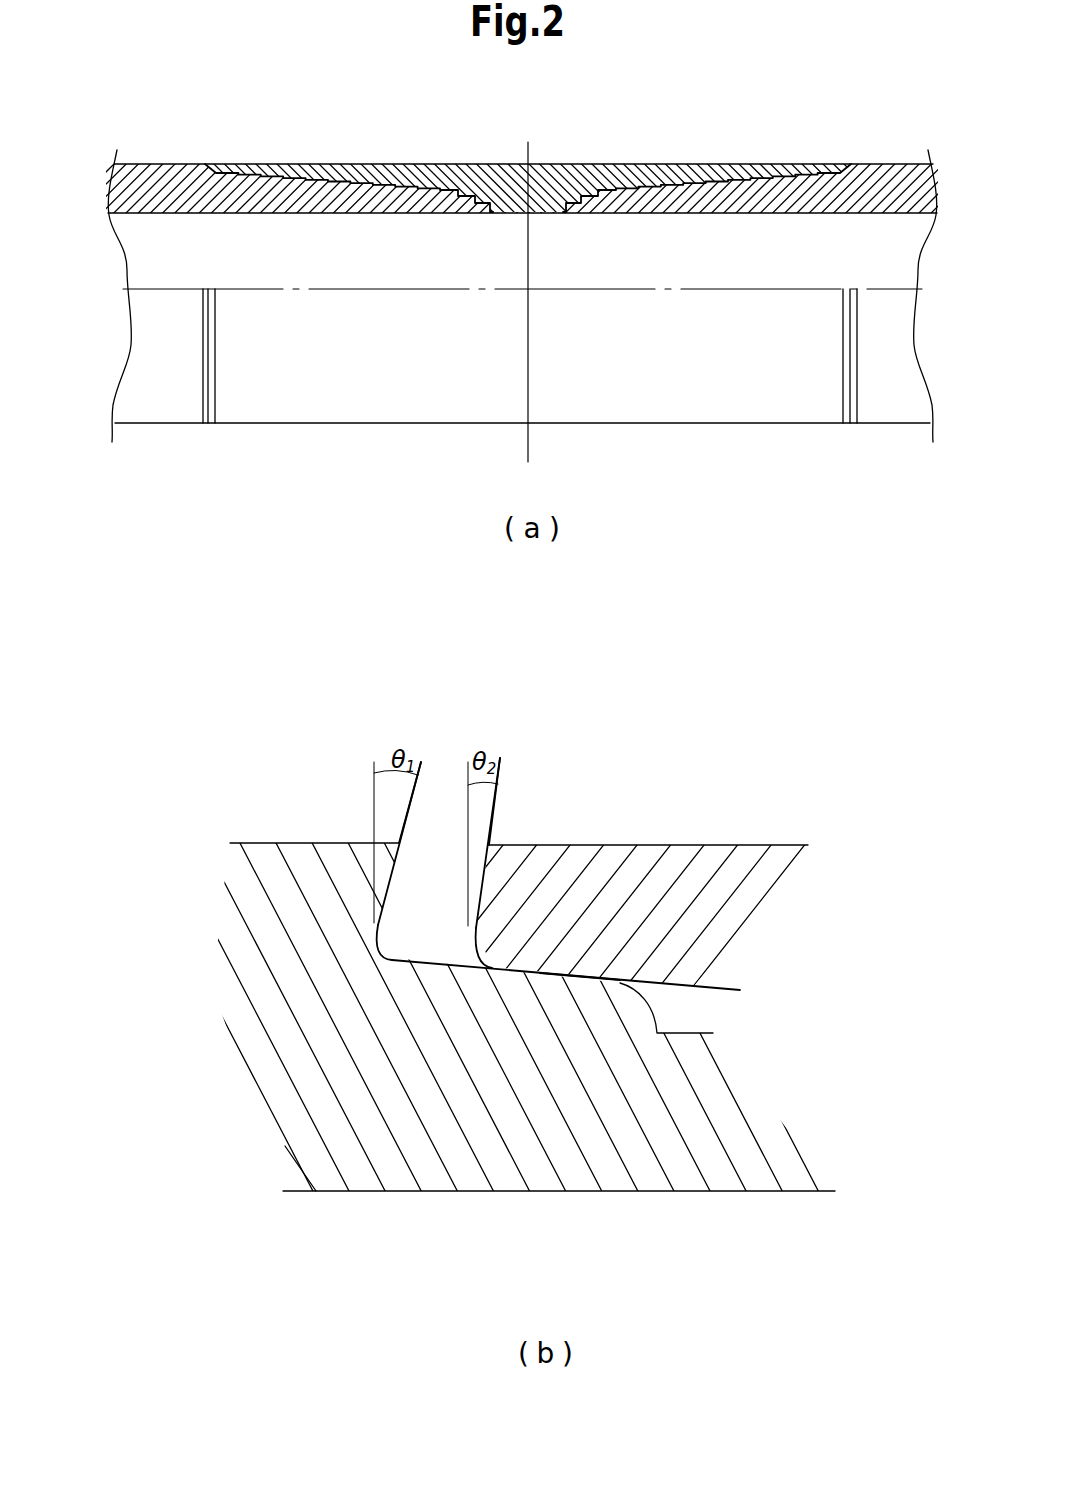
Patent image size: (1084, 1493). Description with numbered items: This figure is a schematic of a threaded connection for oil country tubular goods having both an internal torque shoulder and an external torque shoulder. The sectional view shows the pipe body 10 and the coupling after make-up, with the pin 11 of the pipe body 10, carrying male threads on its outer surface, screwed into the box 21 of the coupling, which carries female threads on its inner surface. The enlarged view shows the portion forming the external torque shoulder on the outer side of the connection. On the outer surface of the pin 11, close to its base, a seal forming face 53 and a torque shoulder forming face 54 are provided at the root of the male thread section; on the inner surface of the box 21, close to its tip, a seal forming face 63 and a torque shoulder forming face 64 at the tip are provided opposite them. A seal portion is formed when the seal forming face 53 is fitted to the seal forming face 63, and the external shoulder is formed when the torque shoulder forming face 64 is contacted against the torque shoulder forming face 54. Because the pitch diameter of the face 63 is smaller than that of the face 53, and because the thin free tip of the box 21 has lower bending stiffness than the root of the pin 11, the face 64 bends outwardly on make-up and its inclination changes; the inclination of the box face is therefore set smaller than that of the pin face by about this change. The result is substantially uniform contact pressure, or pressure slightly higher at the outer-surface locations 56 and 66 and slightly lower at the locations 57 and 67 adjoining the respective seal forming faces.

The pipe body 10 is at (237, 1035).
The pin 11 is at (517, 1087).
The box 21 is at (793, 920).
The seal forming face 53 is at (490, 982).
The torque shoulder forming face 54 is at (367, 893).
The outer surface end of pin torque shoulder forming face 56 is at (387, 857).
The seal-side end of pin torque shoulder forming face 57 is at (367, 928).
The seal forming face 63 is at (578, 963).
The torque shoulder forming face 64 is at (490, 897).
The outer surface end of box torque shoulder forming face 66 is at (507, 842).
The seal-side end of box torque shoulder forming face 67 is at (478, 937).